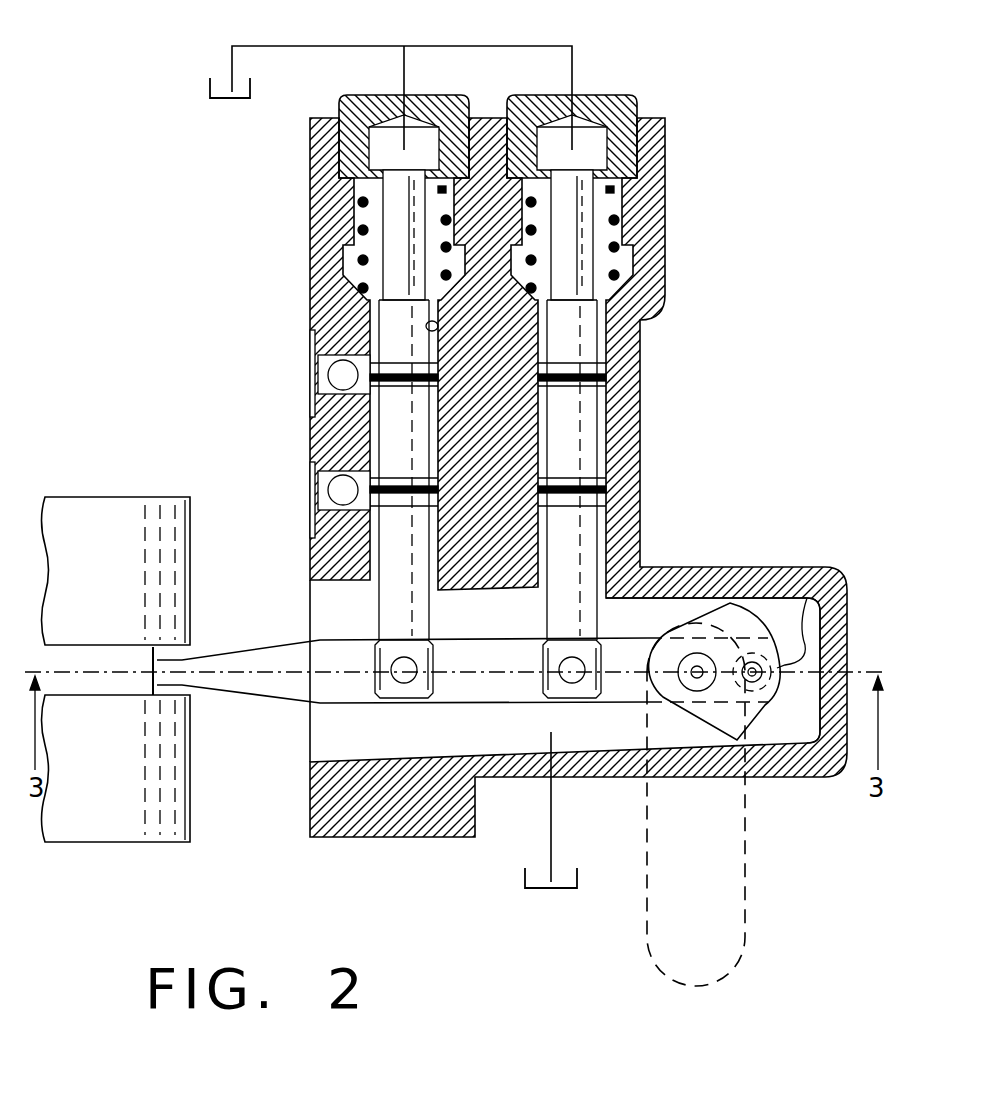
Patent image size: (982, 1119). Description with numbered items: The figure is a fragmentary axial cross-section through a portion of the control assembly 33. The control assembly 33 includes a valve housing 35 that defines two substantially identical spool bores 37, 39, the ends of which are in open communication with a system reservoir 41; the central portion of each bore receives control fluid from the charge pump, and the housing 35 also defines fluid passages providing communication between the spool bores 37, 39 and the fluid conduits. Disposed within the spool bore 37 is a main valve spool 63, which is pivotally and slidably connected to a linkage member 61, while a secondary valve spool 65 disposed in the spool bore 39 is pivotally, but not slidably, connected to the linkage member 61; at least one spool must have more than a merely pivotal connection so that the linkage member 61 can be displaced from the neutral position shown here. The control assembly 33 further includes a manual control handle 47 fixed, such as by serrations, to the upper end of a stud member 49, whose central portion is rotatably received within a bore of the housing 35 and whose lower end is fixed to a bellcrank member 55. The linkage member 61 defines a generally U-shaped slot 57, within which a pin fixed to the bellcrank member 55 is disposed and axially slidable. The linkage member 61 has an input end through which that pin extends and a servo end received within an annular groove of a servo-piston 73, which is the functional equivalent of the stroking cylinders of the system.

The control assembly 33 is at (660, 108).
The valve housing 35 is at (650, 215).
The spool bore 37 is at (550, 565).
The spool bore 39 is at (438, 328).
The system reservoir 41 is at (210, 88).
The manual control handle 47 is at (703, 892).
The stud member 49 is at (697, 655).
The bellcrank member 55 is at (757, 713).
The U-shaped slot 57 is at (806, 590).
The linkage member 61 is at (500, 687).
The main valve spool 63 is at (583, 435).
The secondary valve spool 65 is at (392, 440).
The servo-piston 73 is at (140, 520).